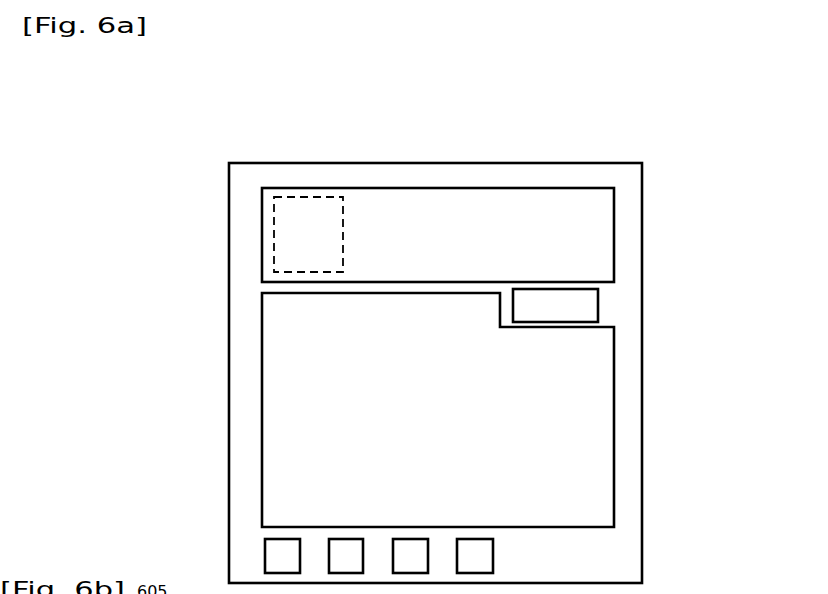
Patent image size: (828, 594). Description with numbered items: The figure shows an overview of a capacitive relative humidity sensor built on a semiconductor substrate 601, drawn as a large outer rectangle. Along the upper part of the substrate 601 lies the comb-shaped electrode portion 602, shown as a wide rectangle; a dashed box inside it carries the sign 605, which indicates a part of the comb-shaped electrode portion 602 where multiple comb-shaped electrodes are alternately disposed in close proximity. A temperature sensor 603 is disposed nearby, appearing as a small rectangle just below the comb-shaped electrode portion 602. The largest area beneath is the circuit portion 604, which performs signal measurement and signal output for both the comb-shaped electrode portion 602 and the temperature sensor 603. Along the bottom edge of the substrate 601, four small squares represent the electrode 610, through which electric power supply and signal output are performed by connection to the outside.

The semiconductor substrate 601 is at (538, 177).
The comb-shaped electrode portion 602 is at (597, 233).
The temperature sensor 603 is at (590, 302).
The circuit portion 604 is at (600, 424).
The part of the comb-shaped electrode portion 605 is at (297, 215).
The electrode 610 is at (277, 563).